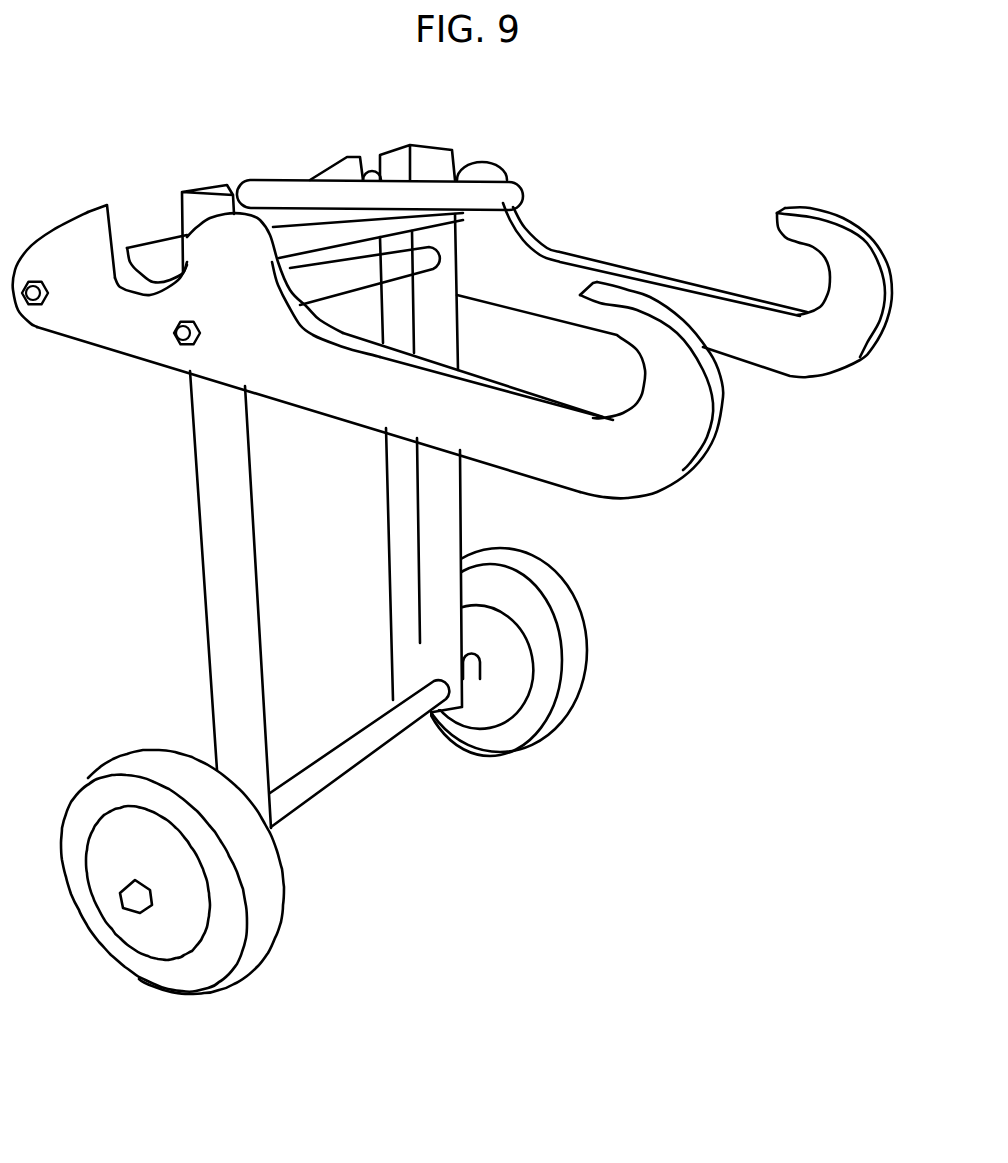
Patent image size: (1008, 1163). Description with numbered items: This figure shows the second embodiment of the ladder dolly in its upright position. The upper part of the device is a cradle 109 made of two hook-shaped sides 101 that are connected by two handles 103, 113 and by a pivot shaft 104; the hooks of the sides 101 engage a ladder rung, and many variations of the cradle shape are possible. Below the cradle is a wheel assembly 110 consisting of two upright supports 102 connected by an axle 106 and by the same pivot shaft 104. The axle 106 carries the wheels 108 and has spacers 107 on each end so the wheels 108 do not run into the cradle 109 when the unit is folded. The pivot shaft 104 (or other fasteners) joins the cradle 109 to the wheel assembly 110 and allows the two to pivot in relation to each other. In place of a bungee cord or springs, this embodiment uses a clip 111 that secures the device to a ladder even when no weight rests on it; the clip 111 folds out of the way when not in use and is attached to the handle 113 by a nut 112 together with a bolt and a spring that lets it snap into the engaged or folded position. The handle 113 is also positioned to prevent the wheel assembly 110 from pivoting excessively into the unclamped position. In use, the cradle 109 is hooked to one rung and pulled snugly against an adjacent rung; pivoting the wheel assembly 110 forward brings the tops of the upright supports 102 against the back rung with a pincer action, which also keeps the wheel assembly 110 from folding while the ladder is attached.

The sides 101 is at (673, 390).
The upright supports 102 is at (397, 537).
The handle 103 is at (155, 260).
The pivot shaft 104 is at (360, 280).
The axle 106 is at (395, 723).
The spacers 107 is at (470, 670).
The wheels 108 is at (265, 892).
The cradle 109 is at (562, 169).
The wheel assembly 110 is at (600, 631).
The clip 111 is at (303, 185).
The nut 112 is at (377, 163).
The handle 113 is at (303, 242).